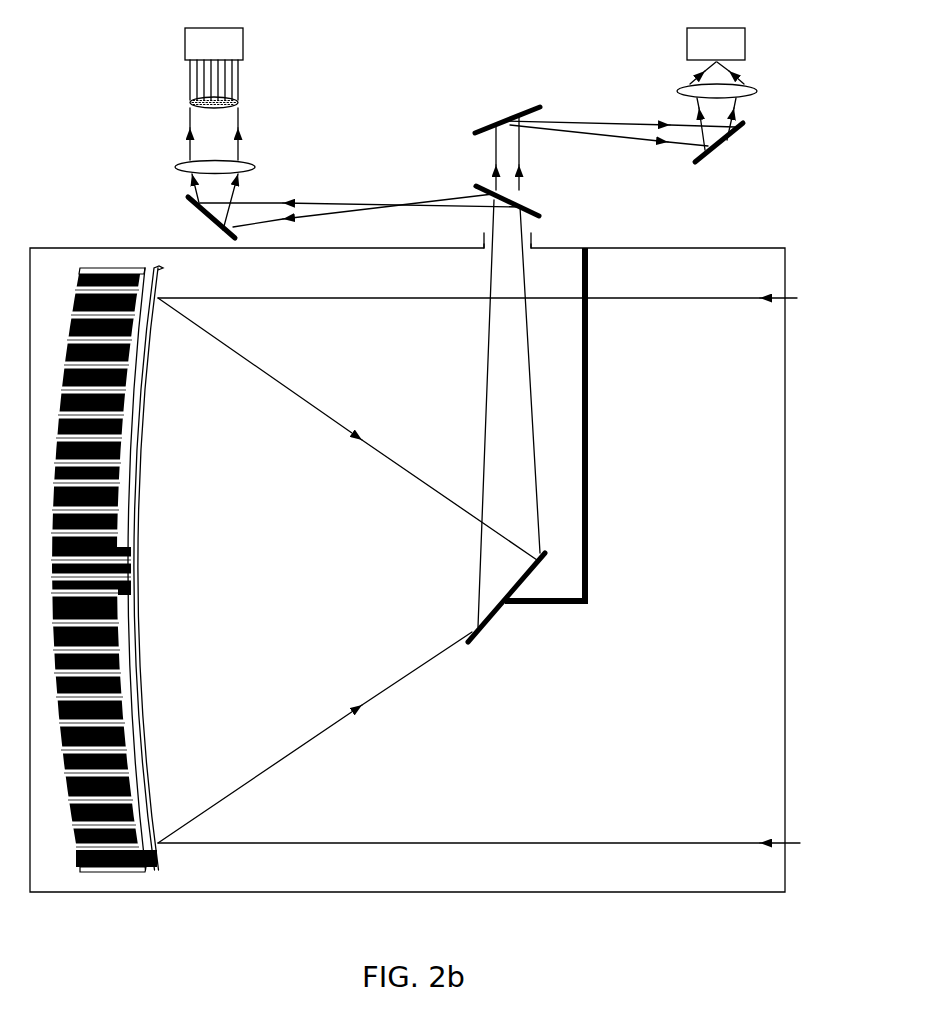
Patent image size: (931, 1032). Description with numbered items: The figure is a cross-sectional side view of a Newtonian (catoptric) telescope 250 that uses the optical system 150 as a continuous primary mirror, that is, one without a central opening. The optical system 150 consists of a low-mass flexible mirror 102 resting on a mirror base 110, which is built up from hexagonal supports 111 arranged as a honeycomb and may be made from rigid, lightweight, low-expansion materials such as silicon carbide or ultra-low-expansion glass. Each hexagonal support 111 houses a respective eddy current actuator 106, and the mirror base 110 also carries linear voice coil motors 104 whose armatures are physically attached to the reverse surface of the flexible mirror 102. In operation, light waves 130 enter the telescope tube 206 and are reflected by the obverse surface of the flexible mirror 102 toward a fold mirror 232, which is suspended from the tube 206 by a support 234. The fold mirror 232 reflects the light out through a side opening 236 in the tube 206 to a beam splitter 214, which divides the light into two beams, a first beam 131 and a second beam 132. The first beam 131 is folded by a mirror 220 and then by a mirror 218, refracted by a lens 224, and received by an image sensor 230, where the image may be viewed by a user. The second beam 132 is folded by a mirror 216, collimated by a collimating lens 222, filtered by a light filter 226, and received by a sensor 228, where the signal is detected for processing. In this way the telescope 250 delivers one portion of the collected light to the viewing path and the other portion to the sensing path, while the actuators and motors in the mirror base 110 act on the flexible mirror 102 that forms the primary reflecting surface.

The Newtonian telescope 250 is at (100, 72).
The telescope tube 206 is at (657, 248).
The side opening 236 is at (483, 257).
The optical system 150 is at (109, 567).
The eddy current actuator 106 is at (113, 268).
The mirror base 110 is at (72, 850).
The hexagonal supports 111 is at (107, 877).
The linear voice coil motors 104 is at (128, 868).
The flexible mirror 102 is at (163, 868).
The light waves 130 is at (718, 296).
The support 234 is at (590, 425).
The fold mirror 232 is at (493, 618).
The beam splitter 214 is at (541, 210).
The beam 131 is at (522, 140).
The beam 132 is at (364, 205).
The mirror 220 is at (510, 118).
The mirror 218 is at (722, 147).
The lens 224 is at (677, 90).
The image sensor 230 is at (687, 45).
The mirror 216 is at (207, 220).
The collimating lens 222 is at (255, 168).
The light filter 226 is at (240, 80).
The sensor 228 is at (245, 43).